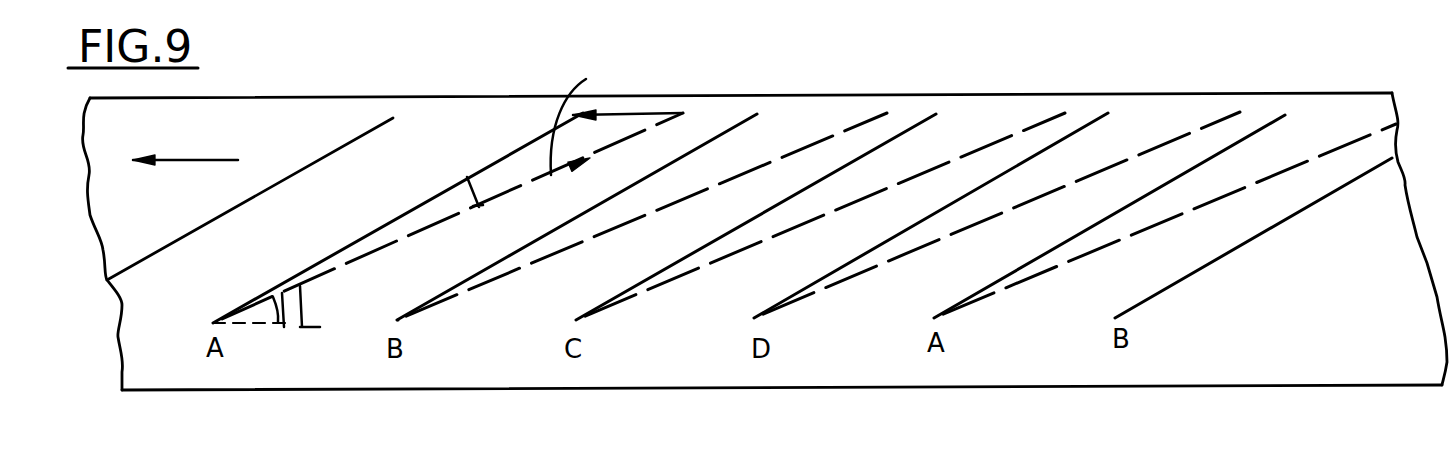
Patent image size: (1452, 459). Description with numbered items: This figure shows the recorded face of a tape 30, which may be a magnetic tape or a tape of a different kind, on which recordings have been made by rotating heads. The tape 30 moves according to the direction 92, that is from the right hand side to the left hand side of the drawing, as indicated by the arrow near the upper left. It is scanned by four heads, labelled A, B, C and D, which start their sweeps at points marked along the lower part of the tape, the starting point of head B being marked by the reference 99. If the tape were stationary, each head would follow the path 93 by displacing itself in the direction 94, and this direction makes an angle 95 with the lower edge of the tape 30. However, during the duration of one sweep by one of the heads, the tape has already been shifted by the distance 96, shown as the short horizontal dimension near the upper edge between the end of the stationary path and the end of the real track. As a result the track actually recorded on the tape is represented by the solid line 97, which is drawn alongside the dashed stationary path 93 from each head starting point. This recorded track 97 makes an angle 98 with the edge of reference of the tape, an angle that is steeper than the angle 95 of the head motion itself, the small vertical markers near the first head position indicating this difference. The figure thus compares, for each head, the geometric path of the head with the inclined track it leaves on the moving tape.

The tape 30 is at (1227, 367).
The direction of tape movement 92 is at (203, 160).
The path of the heads on a stationary tape 93 is at (468, 175).
The direction of head displacement 94 is at (593, 117).
The angle of head displacement 95 is at (278, 322).
The tape shift distance 96 is at (648, 115).
The recorded track 97 is at (523, 143).
The track angle 98 is at (302, 328).
The point B 99 is at (398, 321).